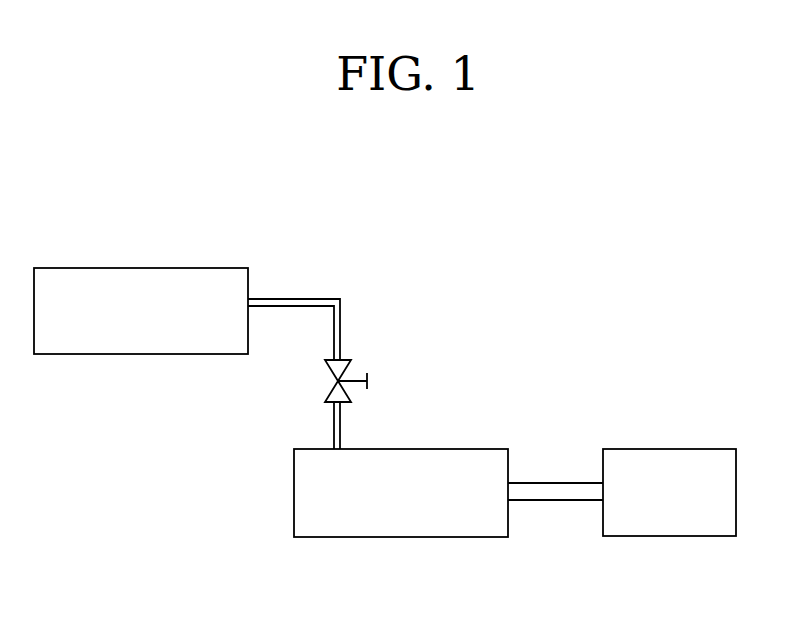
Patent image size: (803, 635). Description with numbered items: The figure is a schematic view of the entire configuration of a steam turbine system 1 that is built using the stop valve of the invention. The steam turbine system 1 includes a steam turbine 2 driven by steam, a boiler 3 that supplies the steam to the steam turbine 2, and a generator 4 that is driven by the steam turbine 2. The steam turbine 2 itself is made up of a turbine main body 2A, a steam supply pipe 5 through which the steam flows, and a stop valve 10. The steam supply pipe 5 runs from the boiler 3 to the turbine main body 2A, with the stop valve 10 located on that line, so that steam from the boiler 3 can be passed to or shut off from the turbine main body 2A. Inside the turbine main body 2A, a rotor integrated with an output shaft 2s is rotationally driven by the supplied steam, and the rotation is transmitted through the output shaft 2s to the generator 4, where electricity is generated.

The steam turbine system 1 is at (548, 275).
The steam turbine 2 is at (423, 347).
The turbine main body 2A is at (460, 449).
The output shaft 2s is at (553, 483).
The boiler 3 is at (201, 268).
The generator 4 is at (680, 449).
The steam supply pipe 5 is at (325, 299).
The stop valve 10 is at (345, 356).